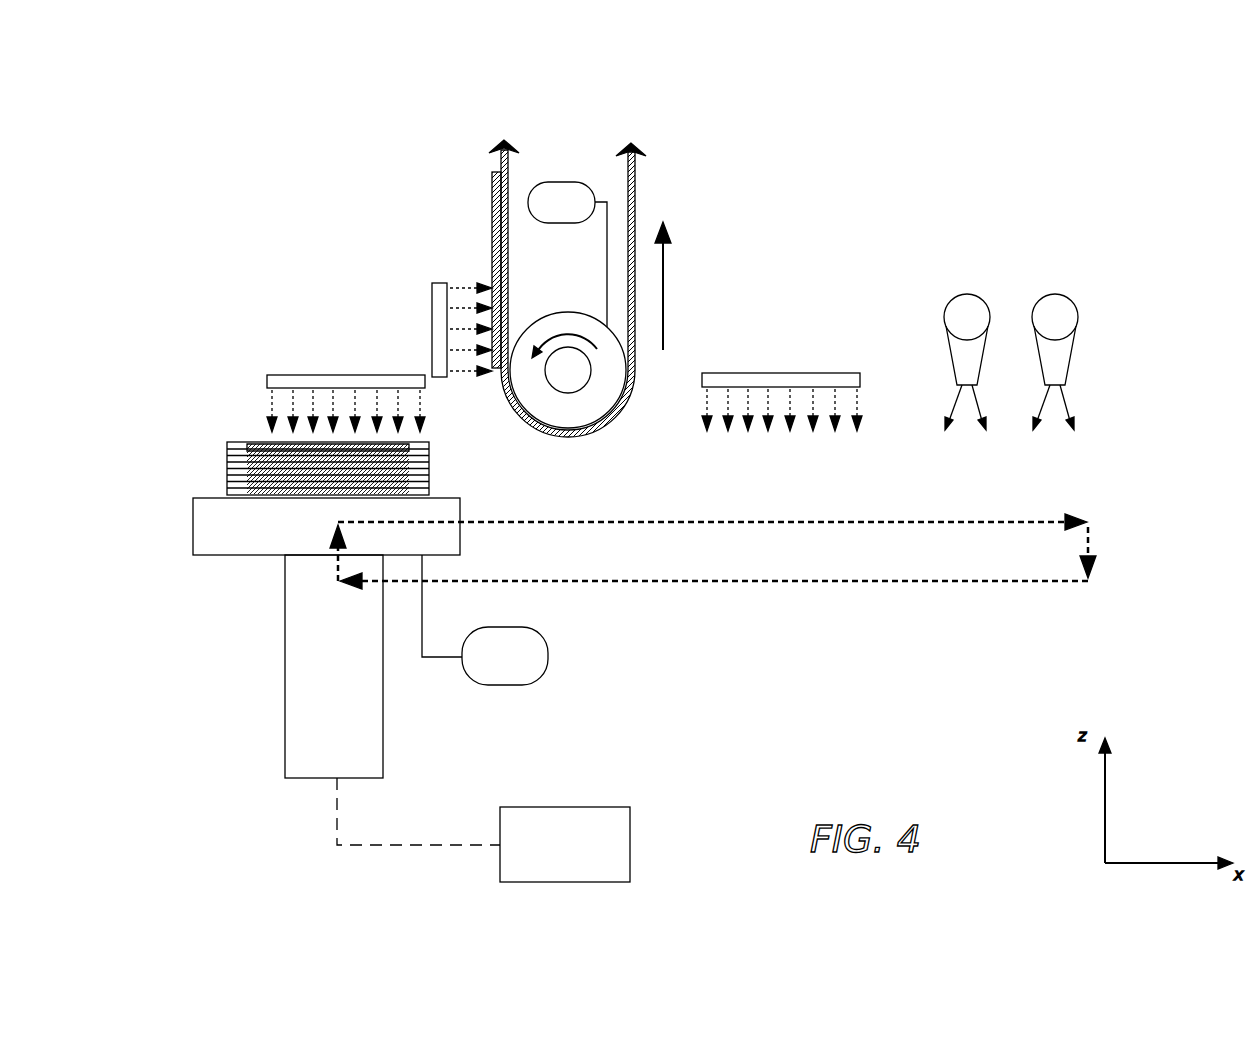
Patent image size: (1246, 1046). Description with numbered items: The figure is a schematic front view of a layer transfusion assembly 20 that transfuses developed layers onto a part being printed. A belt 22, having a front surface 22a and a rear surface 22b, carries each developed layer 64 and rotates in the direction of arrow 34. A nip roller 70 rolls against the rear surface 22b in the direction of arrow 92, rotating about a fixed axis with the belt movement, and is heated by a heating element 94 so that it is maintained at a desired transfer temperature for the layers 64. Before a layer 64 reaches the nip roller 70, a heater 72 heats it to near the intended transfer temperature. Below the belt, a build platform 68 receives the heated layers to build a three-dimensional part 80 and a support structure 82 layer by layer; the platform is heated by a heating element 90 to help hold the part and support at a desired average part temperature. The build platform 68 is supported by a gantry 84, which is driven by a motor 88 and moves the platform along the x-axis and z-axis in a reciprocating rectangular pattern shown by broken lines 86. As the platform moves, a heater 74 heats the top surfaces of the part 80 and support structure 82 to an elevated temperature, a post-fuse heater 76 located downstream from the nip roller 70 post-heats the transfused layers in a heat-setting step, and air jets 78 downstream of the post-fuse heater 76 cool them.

The layer transfusion assembly 20 is at (1152, 602).
The belt 22 is at (478, 166).
The front surface 22a is at (640, 192).
The rear surface 22b is at (512, 172).
The arrow 34 is at (665, 266).
The layer 64 is at (481, 243).
The build platform 68 is at (193, 540).
The nip roller 70 is at (518, 342).
The heater 72 is at (420, 292).
The heater 74 is at (301, 363).
The post-fuse heater 76 is at (774, 362).
The air jets 78 is at (1055, 294).
The 3D part 80 is at (258, 441).
The support structure 82 is at (227, 470).
The gantry 84 is at (383, 714).
The broken lines 86 is at (823, 583).
The motor 88 is at (631, 831).
The heating element 90 is at (548, 650).
The arrow 92 is at (587, 322).
The heating element 94 is at (550, 180).